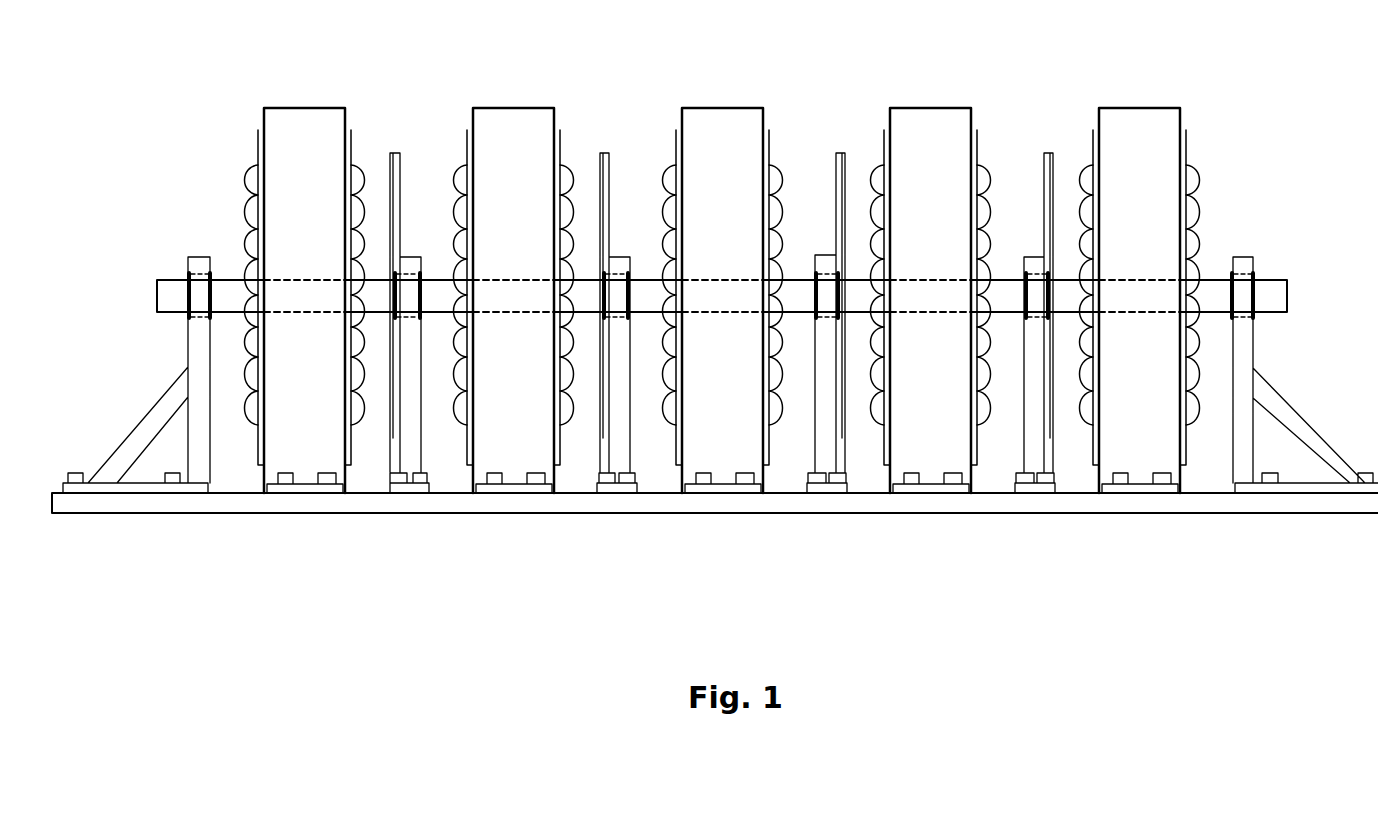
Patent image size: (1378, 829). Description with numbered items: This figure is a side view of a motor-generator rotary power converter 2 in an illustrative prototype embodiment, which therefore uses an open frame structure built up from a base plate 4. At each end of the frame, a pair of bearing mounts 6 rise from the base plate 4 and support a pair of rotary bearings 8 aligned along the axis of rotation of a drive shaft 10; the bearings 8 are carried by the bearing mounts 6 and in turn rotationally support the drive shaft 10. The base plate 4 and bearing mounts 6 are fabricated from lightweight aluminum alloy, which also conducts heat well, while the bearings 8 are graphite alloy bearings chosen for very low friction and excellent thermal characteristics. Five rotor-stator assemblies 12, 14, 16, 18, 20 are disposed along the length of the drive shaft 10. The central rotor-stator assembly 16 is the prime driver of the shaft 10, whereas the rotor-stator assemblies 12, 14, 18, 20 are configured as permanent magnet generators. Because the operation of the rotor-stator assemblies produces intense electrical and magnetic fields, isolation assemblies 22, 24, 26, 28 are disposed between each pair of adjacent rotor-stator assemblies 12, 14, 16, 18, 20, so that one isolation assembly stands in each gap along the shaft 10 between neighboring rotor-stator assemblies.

The motor-generator rotary power converter 2 is at (331, 627).
The base plate 4 is at (607, 513).
The bearing mounts 6 is at (185, 365).
The rotary bearings 8 is at (187, 272).
The drive shaft 10 is at (157, 298).
The rotor-stator assembly 12 is at (280, 108).
The rotor-stator assembly 14 is at (508, 108).
The rotor-stator assembly 16 is at (712, 108).
The rotor-stator assembly 18 is at (918, 108).
The rotor-stator assembly 20 is at (1127, 108).
The isolation assembly 22 is at (395, 153).
The isolation assembly 24 is at (605, 153).
The isolation assembly 26 is at (840, 153).
The isolation assembly 28 is at (1048, 153).